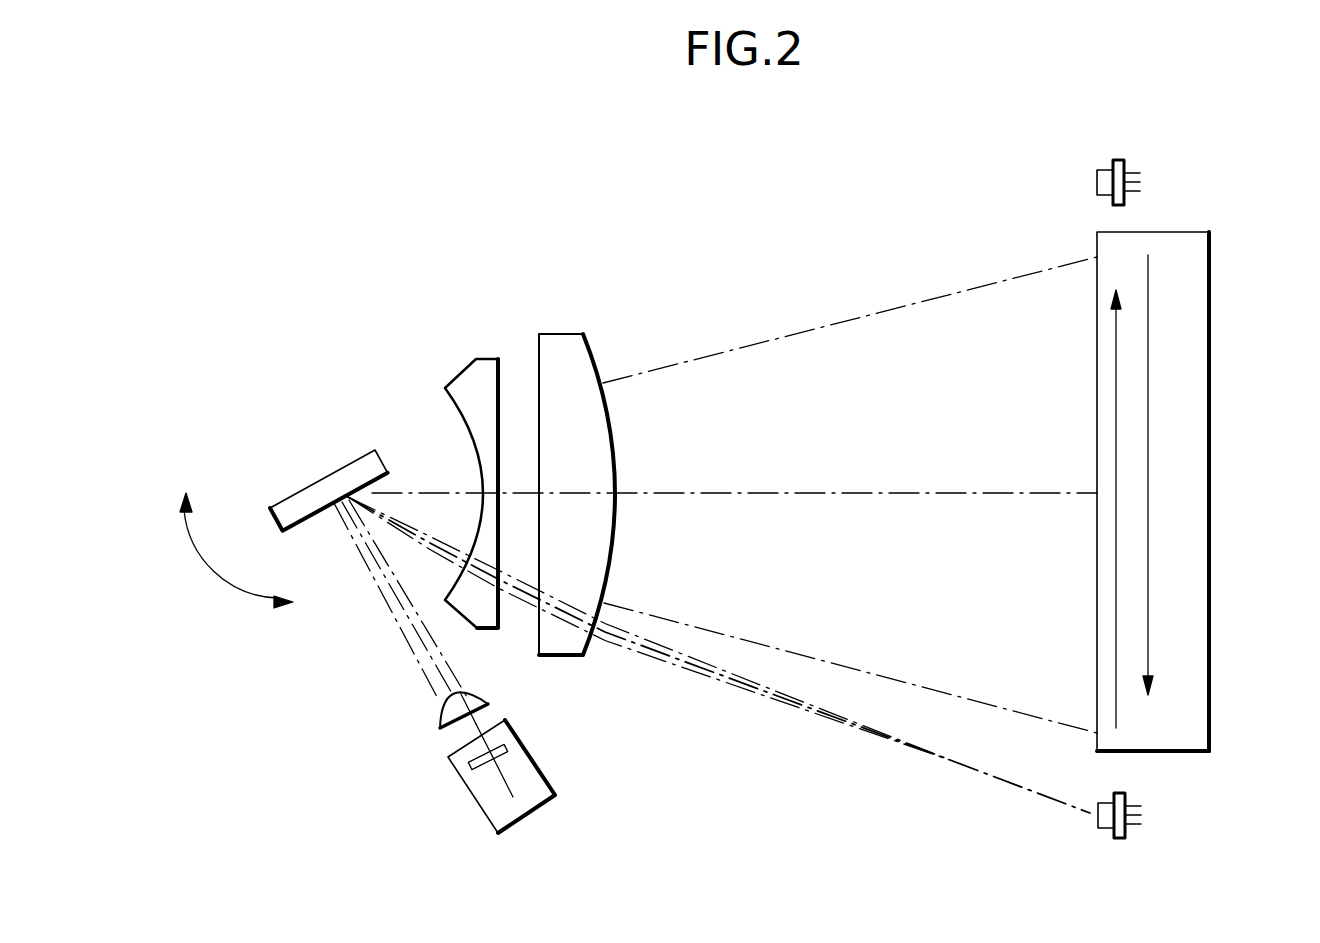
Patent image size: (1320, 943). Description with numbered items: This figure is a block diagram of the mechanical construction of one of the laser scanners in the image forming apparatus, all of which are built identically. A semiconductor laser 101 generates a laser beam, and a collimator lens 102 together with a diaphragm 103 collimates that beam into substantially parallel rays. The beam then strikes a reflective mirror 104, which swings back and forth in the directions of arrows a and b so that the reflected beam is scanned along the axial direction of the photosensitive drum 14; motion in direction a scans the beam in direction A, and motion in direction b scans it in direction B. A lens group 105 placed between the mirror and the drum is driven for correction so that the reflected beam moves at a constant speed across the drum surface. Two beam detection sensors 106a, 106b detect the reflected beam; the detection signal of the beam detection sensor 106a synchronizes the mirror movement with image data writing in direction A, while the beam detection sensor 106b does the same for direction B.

The photosensitive drum 14 is at (1210, 410).
The semiconductor laser 101 is at (507, 735).
The collimator lens 102 is at (437, 709).
The diaphragm 103 is at (467, 687).
The reflective mirror 104 is at (342, 467).
The lens group 105 is at (465, 322).
The beam detection sensor 106a is at (1102, 830).
The beam detection sensor 106b is at (1103, 161).